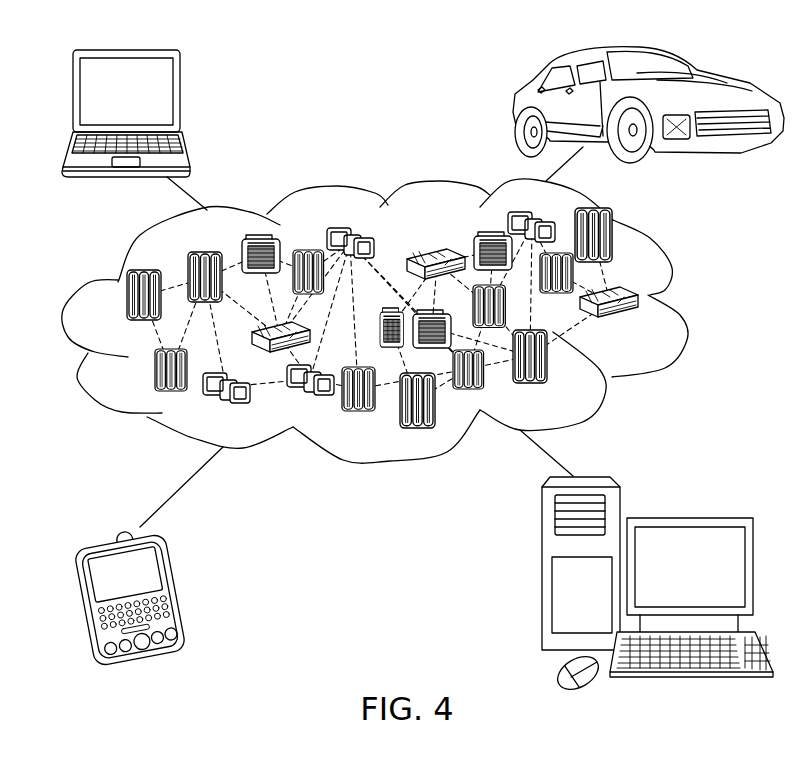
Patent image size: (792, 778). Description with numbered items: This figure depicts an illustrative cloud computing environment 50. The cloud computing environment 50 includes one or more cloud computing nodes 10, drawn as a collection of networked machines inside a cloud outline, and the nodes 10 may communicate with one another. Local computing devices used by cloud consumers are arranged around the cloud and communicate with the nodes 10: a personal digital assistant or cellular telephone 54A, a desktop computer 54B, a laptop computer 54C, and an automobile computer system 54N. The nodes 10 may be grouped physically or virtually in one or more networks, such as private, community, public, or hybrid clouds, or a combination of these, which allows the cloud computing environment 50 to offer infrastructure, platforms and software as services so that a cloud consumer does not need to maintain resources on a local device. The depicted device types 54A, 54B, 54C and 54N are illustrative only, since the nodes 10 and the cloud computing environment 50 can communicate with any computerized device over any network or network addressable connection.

The cloud computing nodes 10 is at (646, 325).
The cloud computing environment 50 is at (689, 294).
The personal digital assistant or cellular telephone 54A is at (175, 592).
The desktop computer 54B is at (683, 518).
The laptop computer 54C is at (182, 98).
The automobile computer system 54N is at (513, 105).